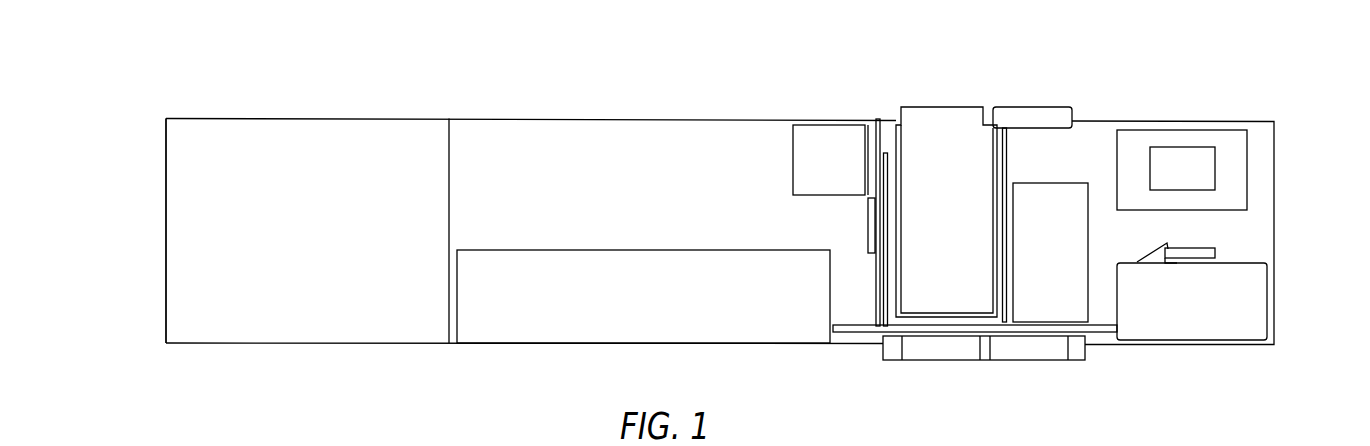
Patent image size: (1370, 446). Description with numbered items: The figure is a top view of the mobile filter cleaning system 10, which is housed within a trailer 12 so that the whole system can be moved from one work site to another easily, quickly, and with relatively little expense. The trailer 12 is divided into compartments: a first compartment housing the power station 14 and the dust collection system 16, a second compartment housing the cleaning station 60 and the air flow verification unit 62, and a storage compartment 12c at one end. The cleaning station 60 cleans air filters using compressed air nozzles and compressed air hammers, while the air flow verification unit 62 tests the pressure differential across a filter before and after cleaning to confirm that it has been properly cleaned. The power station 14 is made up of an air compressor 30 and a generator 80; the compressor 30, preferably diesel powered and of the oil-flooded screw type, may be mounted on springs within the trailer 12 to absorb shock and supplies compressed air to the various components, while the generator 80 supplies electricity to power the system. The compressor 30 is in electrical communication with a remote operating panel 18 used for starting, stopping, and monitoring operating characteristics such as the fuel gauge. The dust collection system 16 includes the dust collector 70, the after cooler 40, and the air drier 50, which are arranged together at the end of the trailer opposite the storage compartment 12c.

The mobile filter cleaning system 10 is at (1236, 60).
The trailer 12 is at (624, 144).
The storage compartment 12c is at (308, 318).
The power station 14 is at (939, 97).
The dust collection system 16 is at (1238, 237).
The remote operating panel 18 is at (868, 230).
The air compressor 30 is at (950, 132).
The after cooler 40 is at (1232, 162).
The air drier 50 is at (1200, 177).
The cleaning station 60 is at (692, 329).
The air flow verification unit 62 is at (830, 135).
The dust collector 70 is at (1233, 313).
The generator 80 is at (1058, 198).